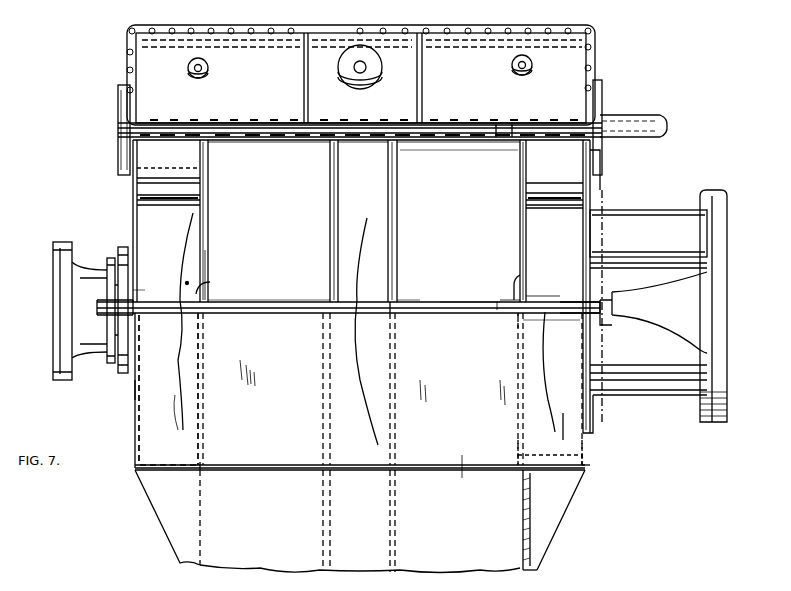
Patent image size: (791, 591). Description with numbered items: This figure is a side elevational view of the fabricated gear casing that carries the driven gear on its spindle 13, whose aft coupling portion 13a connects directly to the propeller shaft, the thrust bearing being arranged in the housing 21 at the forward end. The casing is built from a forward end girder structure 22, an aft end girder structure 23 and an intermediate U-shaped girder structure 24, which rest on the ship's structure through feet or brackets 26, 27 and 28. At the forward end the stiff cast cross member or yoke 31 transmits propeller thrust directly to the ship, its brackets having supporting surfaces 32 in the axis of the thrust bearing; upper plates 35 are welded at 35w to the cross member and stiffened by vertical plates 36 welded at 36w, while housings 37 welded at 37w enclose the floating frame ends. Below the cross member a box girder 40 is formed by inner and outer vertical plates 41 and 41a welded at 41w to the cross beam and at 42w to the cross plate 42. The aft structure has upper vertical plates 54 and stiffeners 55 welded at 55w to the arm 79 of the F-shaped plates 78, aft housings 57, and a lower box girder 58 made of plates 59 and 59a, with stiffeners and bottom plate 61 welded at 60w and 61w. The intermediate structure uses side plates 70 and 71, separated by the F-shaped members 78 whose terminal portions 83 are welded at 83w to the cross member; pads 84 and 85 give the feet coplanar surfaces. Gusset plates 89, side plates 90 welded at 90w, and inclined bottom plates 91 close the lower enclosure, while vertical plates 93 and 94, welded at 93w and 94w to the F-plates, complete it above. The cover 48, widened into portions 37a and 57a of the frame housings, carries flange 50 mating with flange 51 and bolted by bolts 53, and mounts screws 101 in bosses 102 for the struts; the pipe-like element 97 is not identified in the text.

The spindle 13 is at (90, 346).
The coupling portion 13a is at (58, 351).
The housing 21 is at (655, 397).
The forward end beam or girder structure 22 is at (551, 328).
The aft end beam or girder structure 23 is at (165, 365).
The intermediate U-shaped beam or girder structure 24 is at (354, 372).
The feet or brackets 26 is at (565, 305).
The supporting feet or brackets 27 is at (160, 296).
The brackets or feet 28 is at (383, 305).
The yoke or girder member 31 is at (603, 312).
The supporting surfaces 32 is at (546, 314).
The upper plates 35 is at (522, 227).
The weld 35w is at (526, 274).
The vertical plates 36 is at (579, 248).
The weld 36w is at (531, 298).
The housings 37 is at (575, 170).
The upper forward portion of housing 37a is at (578, 66).
The weld 37w is at (531, 185).
The box girder 40 is at (569, 409).
The inner vertical cross plate 41 is at (517, 445).
The outer vertical cross plate 41a is at (591, 455).
The weld 41w is at (516, 320).
The cross plate 42 is at (533, 467).
The weld 42w is at (586, 467).
The gear cover 48 is at (403, 45).
The flange 50 is at (405, 81).
The flange 51 is at (458, 138).
The bolts 53 is at (503, 125).
The vertical upper plates 54 is at (204, 219).
The stiffeners 55 is at (138, 218).
The weld 55w is at (210, 280).
The aft floating frame housings 57 is at (140, 178).
The upper aft portion of housing 57a is at (125, 67).
The lower box girder 58 is at (169, 433).
The inner vertical plate 59 is at (205, 385).
The outer vertical plate 59a is at (137, 390).
The weld 60w is at (140, 385).
The horizontal bottom plate 61 is at (170, 465).
The weld 61w is at (203, 468).
The U-shaped vertical side plate 70 is at (390, 482).
The U-shaped vertical side plate 71 is at (386, 168).
The F-shaped plate members 78 is at (275, 300).
The inwardly-extending arm 79 is at (143, 302).
The terminal portions 83 is at (490, 300).
The weld 83w is at (500, 283).
The pads 84 is at (207, 308).
The pads 85 is at (398, 312).
The gusset plates 89 is at (153, 507).
The outer vertical side plates 90 is at (462, 455).
The weld 90w is at (470, 308).
The inclined bottom plate elements 91 is at (510, 552).
The vertical plates 93 is at (281, 183).
The weld 93w is at (205, 256).
The vertical plates 94 is at (458, 206).
The weld 94w is at (407, 298).
The pipe 97 is at (651, 118).
The screws 101 is at (204, 65).
The bosses 102 is at (204, 74).